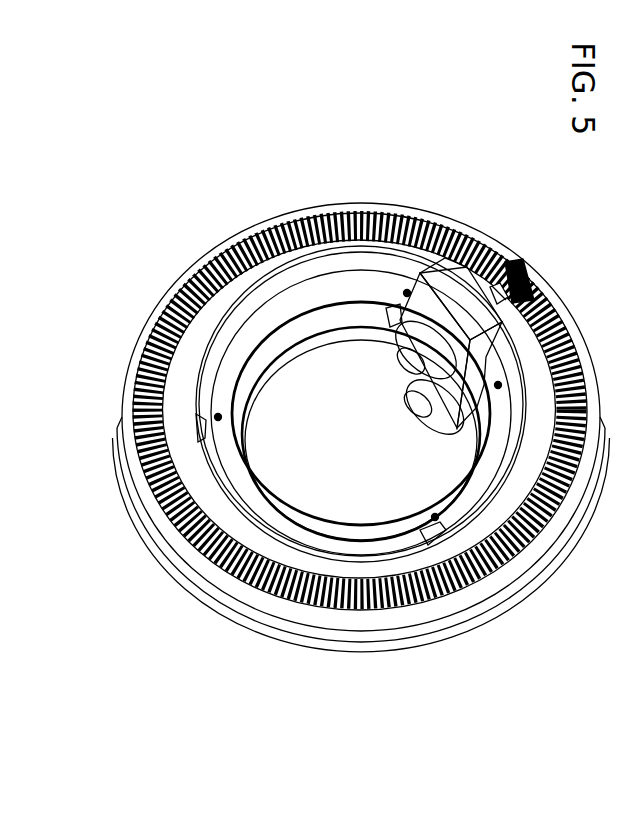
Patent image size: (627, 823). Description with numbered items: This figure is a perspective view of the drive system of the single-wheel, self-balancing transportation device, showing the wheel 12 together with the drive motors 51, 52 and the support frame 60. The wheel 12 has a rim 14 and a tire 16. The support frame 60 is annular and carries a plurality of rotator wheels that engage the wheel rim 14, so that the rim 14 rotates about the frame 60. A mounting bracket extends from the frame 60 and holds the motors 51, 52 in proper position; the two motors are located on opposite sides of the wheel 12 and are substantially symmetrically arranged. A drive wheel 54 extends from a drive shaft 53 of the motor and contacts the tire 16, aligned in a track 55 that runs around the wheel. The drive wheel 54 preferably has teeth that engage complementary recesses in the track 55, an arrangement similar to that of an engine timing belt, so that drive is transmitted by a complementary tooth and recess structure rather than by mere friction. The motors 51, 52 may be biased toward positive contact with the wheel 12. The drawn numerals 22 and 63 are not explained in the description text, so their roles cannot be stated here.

The wheel 12 is at (485, 654).
The rim 14 is at (210, 570).
The tire 16 is at (248, 606).
The housing rim 22 is at (427, 606).
The drive motor 51 is at (406, 412).
The drive motor 52 is at (400, 353).
The drive shaft 53 is at (373, 203).
The drive wheel 54 is at (537, 260).
The track 55 is at (450, 223).
The support frame 60 is at (226, 378).
The mounting ring 63 is at (195, 437).